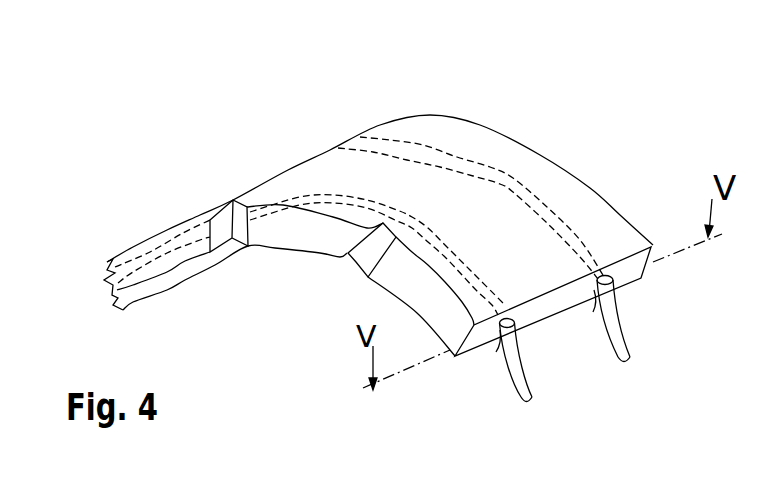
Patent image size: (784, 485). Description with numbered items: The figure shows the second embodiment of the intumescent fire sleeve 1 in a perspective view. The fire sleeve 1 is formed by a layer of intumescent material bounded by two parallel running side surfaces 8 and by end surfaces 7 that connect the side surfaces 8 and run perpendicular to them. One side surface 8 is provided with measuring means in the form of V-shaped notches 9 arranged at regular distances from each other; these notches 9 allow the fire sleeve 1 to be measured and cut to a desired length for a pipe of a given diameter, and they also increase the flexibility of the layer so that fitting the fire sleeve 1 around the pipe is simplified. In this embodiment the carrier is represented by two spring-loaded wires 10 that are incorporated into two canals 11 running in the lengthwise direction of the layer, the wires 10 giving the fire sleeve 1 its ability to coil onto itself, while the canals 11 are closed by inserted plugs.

The fire sleeve 1 is at (400, 192).
The end surface 7 is at (638, 273).
The side surface 8 is at (437, 295).
The V-shaped notch 9 is at (233, 241).
The spring-loaded wire 10 is at (632, 330).
The canal 11 is at (593, 312).